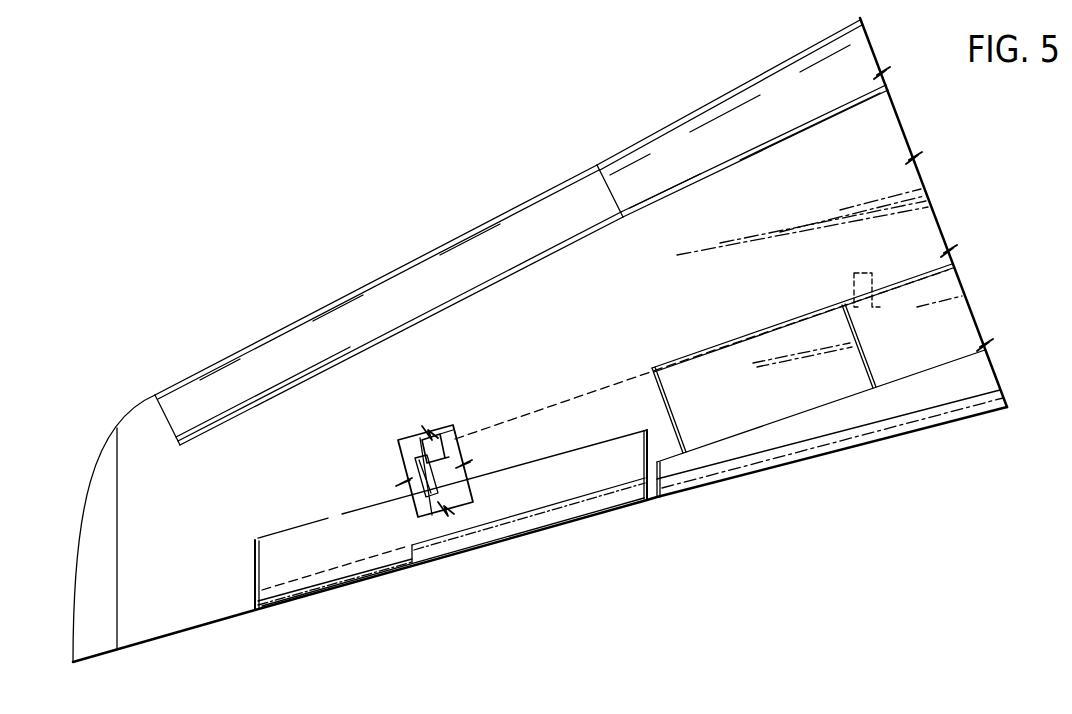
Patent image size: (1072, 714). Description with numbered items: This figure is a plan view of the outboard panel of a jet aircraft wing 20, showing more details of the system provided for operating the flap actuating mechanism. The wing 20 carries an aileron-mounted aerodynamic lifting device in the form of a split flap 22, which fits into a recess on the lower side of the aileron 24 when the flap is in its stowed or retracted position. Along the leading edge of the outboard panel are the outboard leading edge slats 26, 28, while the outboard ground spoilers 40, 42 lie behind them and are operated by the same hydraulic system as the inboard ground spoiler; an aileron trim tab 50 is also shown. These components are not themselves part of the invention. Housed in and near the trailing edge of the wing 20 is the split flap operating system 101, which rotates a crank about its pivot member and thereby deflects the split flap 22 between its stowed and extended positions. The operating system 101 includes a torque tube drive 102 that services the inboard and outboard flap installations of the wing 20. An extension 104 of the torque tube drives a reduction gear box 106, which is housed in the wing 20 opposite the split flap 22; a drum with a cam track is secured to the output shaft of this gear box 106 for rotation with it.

The jet aircraft wing 20 is at (346, 264).
The split flap 22 is at (346, 571).
The aileron 24 is at (323, 509).
The outboard leading edge slat 26 is at (280, 323).
The outboard leading edge slat 28 is at (700, 103).
The outboard ground spoiler 40 is at (787, 430).
The outboard ground spoiler 42 is at (929, 382).
The aileron trim tab 50 is at (543, 533).
The split flap operating system 101 is at (435, 415).
The torque tube drive 102 is at (576, 393).
The extension of the torque tube 104 is at (445, 447).
The reduction gear box 106 is at (422, 438).